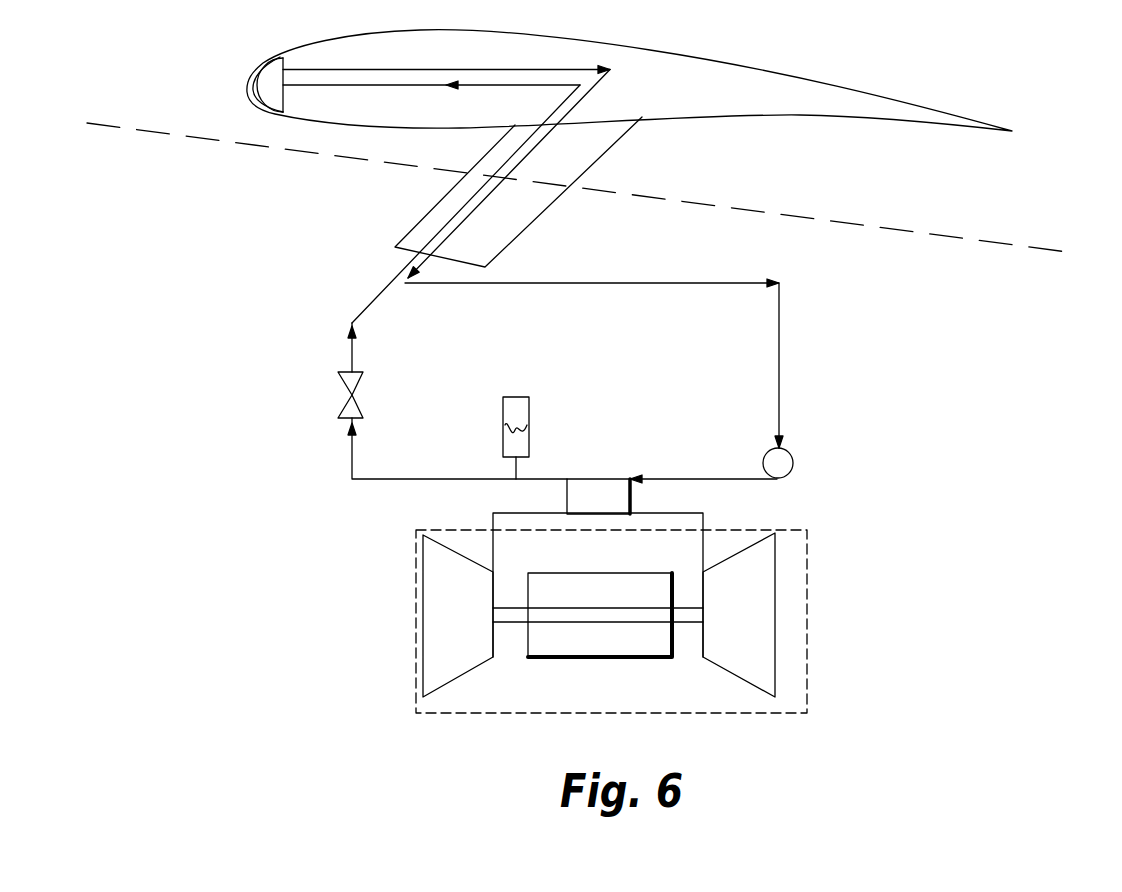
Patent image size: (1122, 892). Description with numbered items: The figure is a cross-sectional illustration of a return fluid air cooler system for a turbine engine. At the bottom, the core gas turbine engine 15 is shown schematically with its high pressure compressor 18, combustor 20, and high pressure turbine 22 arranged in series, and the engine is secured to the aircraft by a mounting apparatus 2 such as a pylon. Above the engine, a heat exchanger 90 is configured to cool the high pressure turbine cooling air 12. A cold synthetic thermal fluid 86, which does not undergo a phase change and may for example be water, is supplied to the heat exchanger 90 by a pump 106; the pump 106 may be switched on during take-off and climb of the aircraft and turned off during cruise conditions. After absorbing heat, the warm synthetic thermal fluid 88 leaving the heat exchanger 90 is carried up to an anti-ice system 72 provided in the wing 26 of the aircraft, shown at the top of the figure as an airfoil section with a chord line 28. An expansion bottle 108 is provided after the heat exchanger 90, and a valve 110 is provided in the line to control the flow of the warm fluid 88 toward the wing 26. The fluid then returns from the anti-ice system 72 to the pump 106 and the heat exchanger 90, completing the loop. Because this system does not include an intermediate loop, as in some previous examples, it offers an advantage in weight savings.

The mounting apparatus 2 is at (422, 218).
The high pressure turbine cooling air 12 is at (703, 568).
The core gas turbine engine 15 is at (403, 570).
The high pressure compressor 18 is at (458, 675).
The combustor 20 is at (673, 657).
The high pressure turbine 22 is at (775, 547).
The wing 26 is at (290, 47).
The wing chord line 28 is at (1053, 250).
The anti-ice system 72 is at (248, 88).
The cold synthetic thermal fluid 86 is at (483, 200).
The warm synthetic thermal fluid 88 is at (382, 293).
The heat exchanger 90 is at (590, 483).
The pump 106 is at (793, 463).
The expansion bottle 108 is at (530, 402).
The valve 110 is at (360, 372).